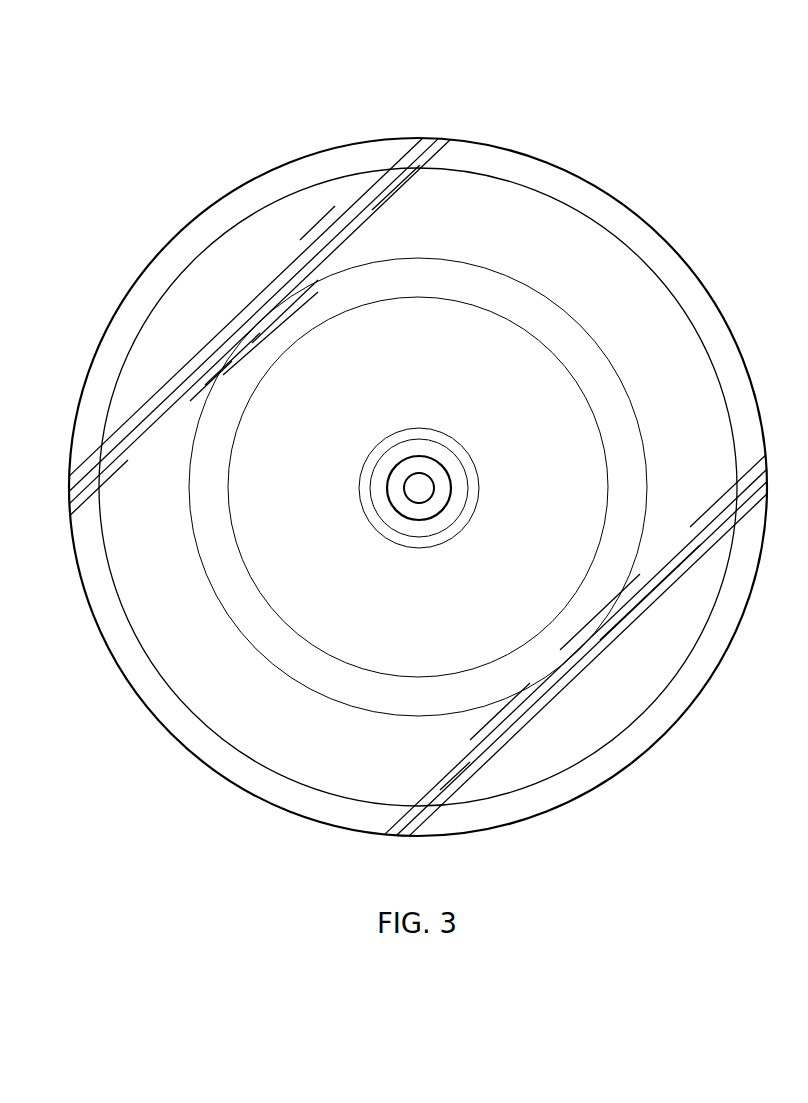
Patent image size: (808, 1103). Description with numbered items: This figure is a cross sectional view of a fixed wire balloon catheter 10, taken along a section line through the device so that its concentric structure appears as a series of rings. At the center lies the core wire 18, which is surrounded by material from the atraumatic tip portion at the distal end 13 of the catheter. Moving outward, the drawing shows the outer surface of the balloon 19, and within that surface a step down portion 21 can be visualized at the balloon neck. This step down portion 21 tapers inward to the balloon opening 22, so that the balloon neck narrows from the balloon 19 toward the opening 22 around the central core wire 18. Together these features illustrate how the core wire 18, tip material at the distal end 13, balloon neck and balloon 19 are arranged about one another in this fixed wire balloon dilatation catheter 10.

The fixed wire balloon catheter 10 is at (753, 85).
The balloon 19 is at (722, 308).
The step down portion 21 is at (592, 403).
The balloon opening 22 is at (467, 452).
The distal end 13 is at (440, 460).
The core wire 18 is at (422, 489).